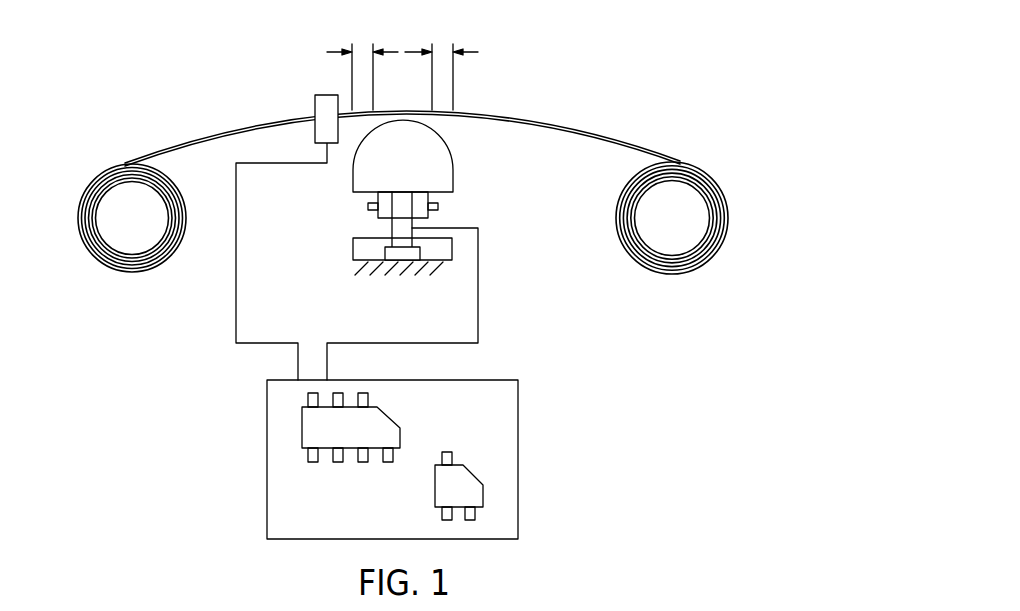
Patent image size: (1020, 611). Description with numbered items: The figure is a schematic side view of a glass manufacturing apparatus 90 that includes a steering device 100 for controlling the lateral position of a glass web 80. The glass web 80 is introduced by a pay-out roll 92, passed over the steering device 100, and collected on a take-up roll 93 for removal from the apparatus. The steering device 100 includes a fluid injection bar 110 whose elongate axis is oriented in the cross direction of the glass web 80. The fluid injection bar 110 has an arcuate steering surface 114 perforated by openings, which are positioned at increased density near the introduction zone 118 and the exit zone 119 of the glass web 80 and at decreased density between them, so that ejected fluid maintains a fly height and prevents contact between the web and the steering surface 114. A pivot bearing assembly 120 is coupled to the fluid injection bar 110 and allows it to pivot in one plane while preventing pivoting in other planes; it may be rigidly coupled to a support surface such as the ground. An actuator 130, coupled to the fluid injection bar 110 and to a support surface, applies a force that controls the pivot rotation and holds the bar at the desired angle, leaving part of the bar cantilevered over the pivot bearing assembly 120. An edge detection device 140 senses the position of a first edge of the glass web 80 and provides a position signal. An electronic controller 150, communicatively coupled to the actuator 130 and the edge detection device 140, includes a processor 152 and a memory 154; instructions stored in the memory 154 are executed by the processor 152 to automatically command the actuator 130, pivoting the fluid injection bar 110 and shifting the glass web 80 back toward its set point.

The glass web 80 is at (599, 129).
The glass manufacturing apparatus 90 is at (710, 73).
The pay-out roll 92 is at (92, 253).
The take-up roll 93 is at (712, 252).
The steering device 100 is at (478, 98).
The fluid injection bar 110 is at (342, 185).
The steering surface 114 is at (454, 170).
The introduction zone 118 is at (363, 50).
The exit zone 119 is at (452, 50).
The pivot bearing assembly 120 is at (391, 228).
The actuator 130 is at (385, 253).
The edge detection device 140 is at (315, 100).
The electronic controller 150 is at (573, 416).
The processor 152 is at (400, 435).
The memory 154 is at (435, 495).